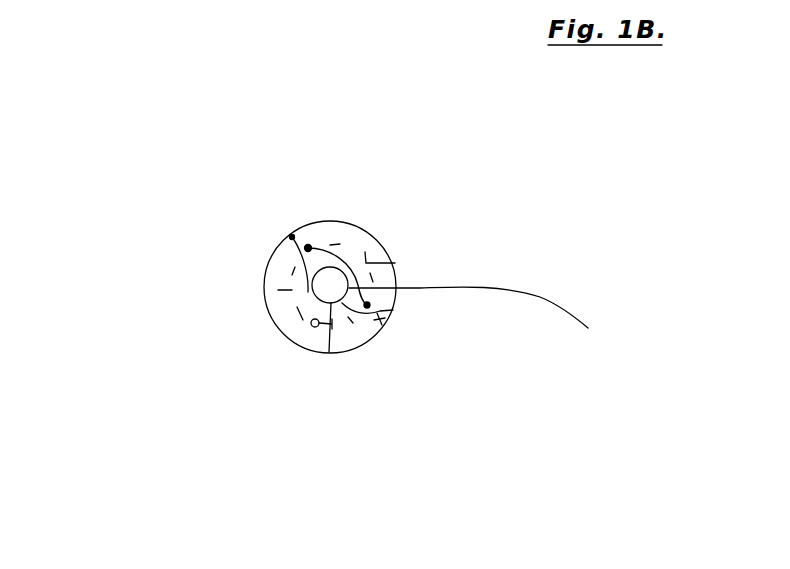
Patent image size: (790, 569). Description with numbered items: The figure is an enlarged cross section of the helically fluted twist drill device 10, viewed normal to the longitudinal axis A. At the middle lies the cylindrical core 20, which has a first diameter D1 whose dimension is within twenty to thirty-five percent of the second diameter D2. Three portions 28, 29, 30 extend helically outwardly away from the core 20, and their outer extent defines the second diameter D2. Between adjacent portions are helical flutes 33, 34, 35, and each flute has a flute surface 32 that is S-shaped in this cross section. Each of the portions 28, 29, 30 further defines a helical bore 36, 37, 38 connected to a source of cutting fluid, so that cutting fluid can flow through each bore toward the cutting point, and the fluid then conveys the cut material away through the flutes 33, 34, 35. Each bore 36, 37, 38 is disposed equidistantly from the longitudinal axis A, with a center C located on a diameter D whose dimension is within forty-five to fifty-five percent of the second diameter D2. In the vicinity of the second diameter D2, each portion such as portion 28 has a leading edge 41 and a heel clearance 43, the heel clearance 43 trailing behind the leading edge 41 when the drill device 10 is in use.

The helically fluted twist drill device 10 is at (318, 190).
The cylindrical core 20 is at (310, 297).
The portion 28 is at (385, 318).
The portion 29 is at (293, 243).
The portion 30 is at (337, 303).
The flute surface 32 is at (287, 252).
The helical flute 33 is at (383, 280).
The helical flute 34 is at (280, 280).
The helical flute 35 is at (342, 304).
The helical bore 36 is at (393, 310).
The helical bore 37 is at (308, 246).
The helical bore 38 is at (311, 325).
The leading edge 41 is at (366, 305).
The heel clearance 43 is at (382, 315).
The longitudinal axis A is at (355, 343).
The center C is at (275, 253).
The diameter D is at (395, 263).
The first diameter D1 is at (485, 314).
The second diameter D2 is at (353, 223).